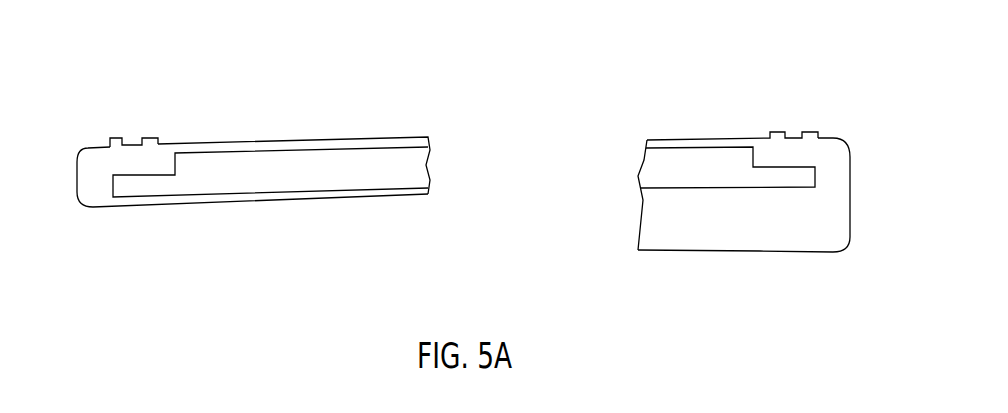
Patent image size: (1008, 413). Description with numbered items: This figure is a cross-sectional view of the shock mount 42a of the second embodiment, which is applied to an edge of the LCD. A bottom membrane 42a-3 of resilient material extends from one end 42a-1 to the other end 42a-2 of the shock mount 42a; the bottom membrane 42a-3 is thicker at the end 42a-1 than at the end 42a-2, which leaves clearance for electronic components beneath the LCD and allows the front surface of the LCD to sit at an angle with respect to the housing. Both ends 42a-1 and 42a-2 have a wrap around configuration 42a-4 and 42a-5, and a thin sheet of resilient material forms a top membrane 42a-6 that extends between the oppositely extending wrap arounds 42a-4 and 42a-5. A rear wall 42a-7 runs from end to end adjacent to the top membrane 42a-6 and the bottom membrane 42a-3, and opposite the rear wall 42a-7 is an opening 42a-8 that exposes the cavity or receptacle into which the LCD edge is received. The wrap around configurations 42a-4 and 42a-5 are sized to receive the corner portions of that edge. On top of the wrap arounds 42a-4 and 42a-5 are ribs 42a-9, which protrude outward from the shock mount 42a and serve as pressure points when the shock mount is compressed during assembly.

The shock mount 42a is at (96, 96).
The end 42a-1 is at (823, 245).
The end 42a-2 is at (239, 214).
The bottom membrane 42a-3 is at (663, 235).
The wrap around configuration 42a-4 is at (98, 175).
The wrap around configuration 42a-5 is at (842, 167).
The top membrane 42a-6 is at (353, 139).
The rear wall 42a-7 is at (638, 177).
The opening 42a-8 is at (290, 178).
The ribs 42a-9 is at (112, 140).